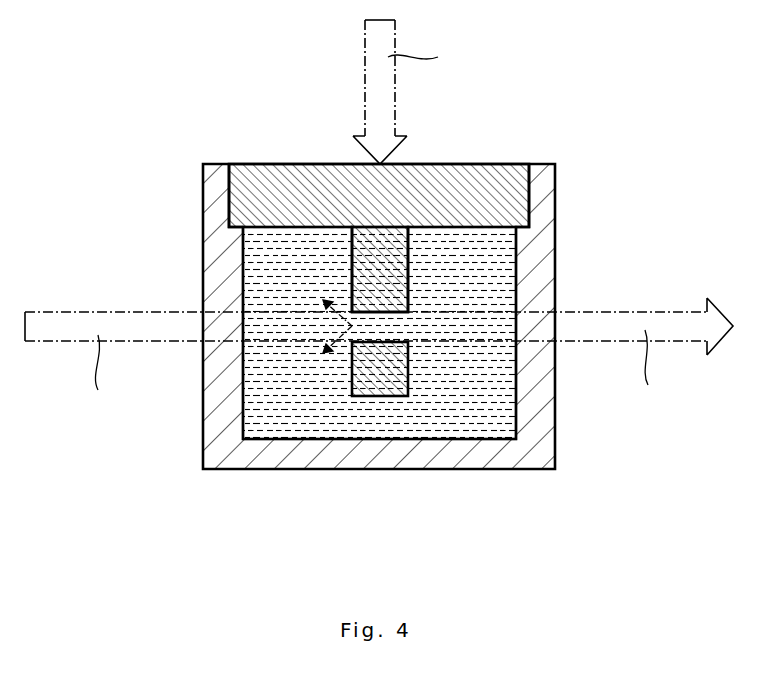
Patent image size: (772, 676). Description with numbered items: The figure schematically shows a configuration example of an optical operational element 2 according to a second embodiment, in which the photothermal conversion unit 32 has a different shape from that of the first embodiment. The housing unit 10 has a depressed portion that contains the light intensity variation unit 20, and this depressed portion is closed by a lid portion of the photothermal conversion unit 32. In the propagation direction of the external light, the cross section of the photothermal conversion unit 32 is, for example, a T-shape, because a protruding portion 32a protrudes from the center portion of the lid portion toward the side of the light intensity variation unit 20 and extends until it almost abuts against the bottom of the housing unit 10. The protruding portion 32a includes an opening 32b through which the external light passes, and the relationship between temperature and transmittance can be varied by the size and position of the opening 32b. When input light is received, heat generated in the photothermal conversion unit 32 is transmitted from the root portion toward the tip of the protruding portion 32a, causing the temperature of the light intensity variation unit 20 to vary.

The optical operational element 2 is at (379, 273).
The housing unit 10 is at (552, 229).
The light intensity variation unit 20 is at (401, 428).
The photothermal conversion unit 32 is at (481, 175).
The protruding portion 32a is at (362, 266).
The opening 32b is at (409, 322).